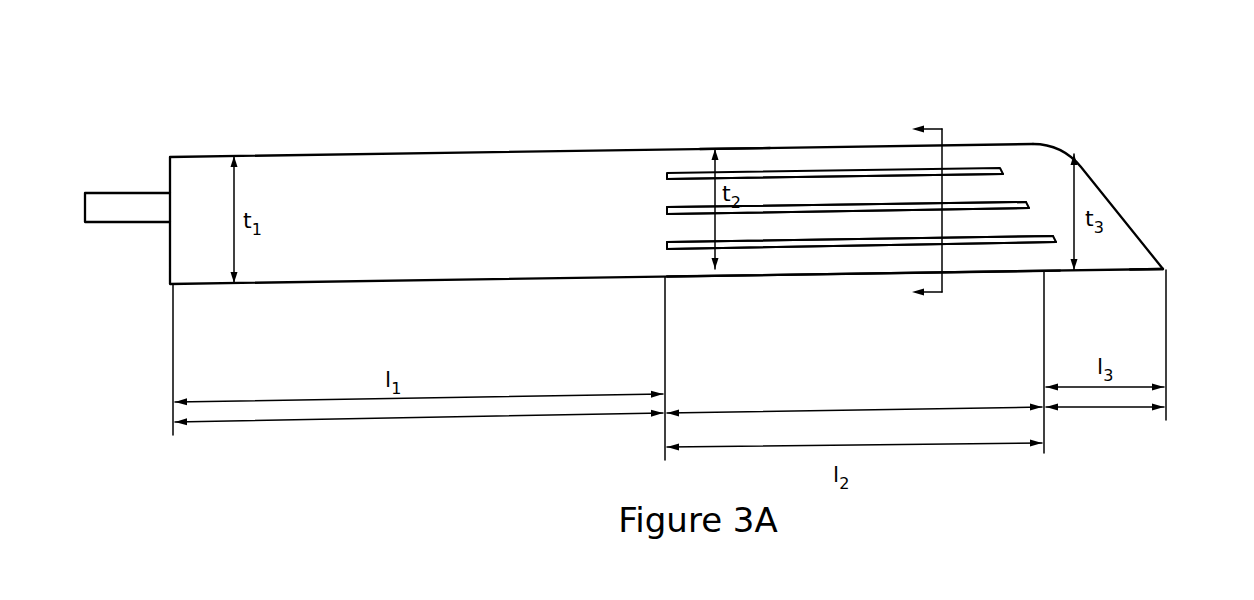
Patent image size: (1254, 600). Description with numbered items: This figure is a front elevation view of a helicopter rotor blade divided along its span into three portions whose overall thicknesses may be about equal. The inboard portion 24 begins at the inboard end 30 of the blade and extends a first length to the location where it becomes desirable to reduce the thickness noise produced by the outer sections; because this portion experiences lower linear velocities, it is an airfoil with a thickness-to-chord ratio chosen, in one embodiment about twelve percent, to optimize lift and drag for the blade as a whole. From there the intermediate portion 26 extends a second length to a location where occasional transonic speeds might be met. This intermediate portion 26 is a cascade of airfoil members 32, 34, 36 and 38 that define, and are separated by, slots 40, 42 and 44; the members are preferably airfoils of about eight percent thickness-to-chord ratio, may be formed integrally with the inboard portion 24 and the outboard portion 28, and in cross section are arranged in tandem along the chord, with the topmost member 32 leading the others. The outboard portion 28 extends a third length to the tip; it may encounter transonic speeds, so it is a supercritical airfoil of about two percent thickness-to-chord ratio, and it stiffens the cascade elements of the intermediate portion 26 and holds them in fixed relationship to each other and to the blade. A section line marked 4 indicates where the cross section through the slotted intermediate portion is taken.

The section line 4- 4 is at (927, 214).
The inboard portion 24 is at (387, 156).
The intermediate portion 26 is at (861, 188).
The outboard portion 28 is at (1035, 144).
The inboard end 30 is at (168, 175).
The airfoil member 32 is at (735, 147).
The airfoil member 34 is at (672, 214).
The airfoil member 36 is at (688, 243).
The airfoil member 38 is at (740, 278).
The slot 40 is at (862, 172).
The slot 42 is at (795, 208).
The slot 44 is at (850, 243).